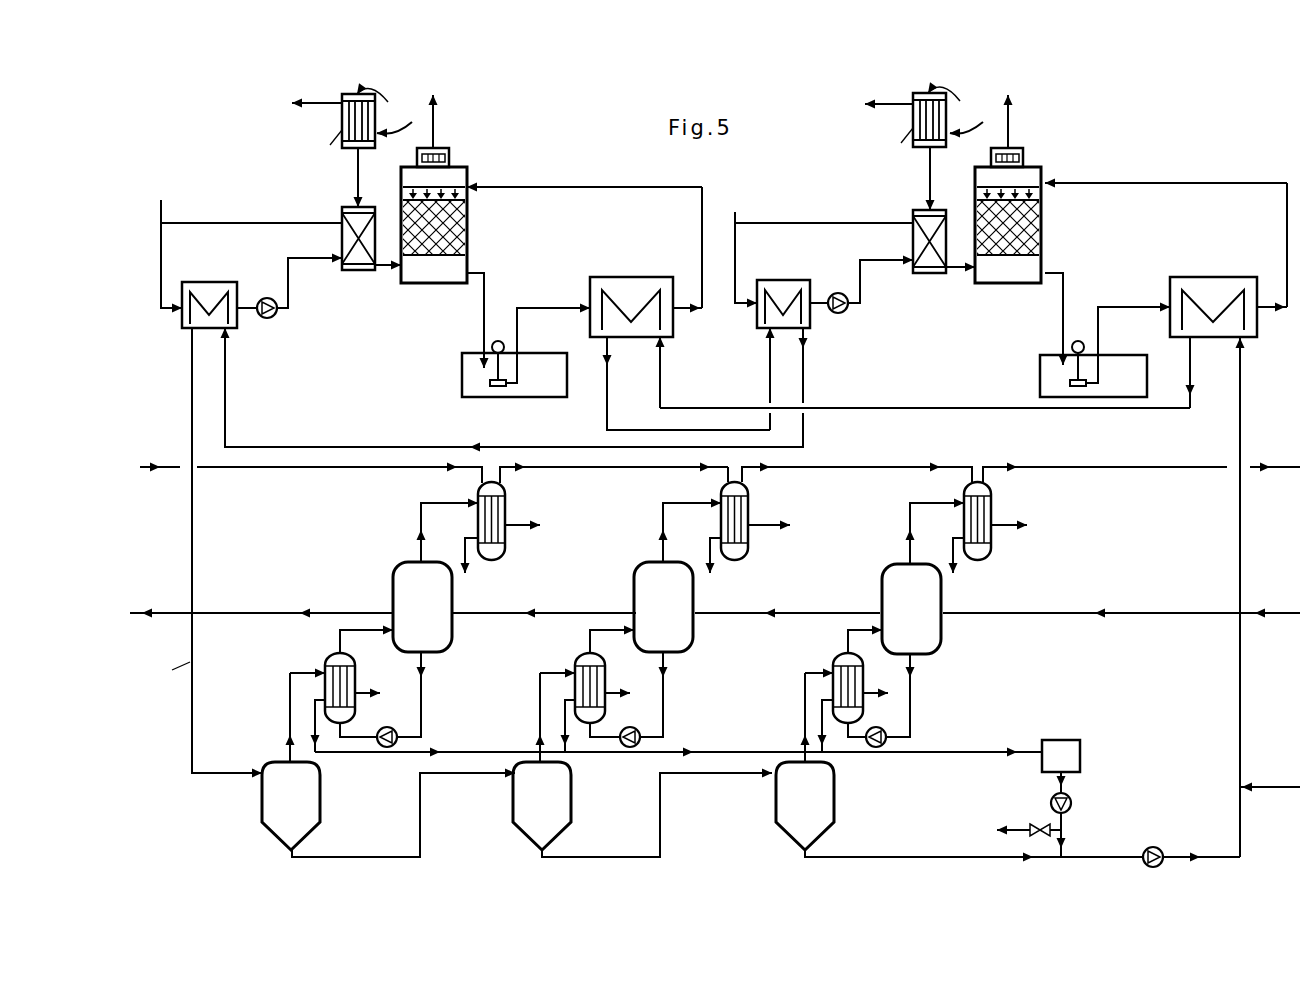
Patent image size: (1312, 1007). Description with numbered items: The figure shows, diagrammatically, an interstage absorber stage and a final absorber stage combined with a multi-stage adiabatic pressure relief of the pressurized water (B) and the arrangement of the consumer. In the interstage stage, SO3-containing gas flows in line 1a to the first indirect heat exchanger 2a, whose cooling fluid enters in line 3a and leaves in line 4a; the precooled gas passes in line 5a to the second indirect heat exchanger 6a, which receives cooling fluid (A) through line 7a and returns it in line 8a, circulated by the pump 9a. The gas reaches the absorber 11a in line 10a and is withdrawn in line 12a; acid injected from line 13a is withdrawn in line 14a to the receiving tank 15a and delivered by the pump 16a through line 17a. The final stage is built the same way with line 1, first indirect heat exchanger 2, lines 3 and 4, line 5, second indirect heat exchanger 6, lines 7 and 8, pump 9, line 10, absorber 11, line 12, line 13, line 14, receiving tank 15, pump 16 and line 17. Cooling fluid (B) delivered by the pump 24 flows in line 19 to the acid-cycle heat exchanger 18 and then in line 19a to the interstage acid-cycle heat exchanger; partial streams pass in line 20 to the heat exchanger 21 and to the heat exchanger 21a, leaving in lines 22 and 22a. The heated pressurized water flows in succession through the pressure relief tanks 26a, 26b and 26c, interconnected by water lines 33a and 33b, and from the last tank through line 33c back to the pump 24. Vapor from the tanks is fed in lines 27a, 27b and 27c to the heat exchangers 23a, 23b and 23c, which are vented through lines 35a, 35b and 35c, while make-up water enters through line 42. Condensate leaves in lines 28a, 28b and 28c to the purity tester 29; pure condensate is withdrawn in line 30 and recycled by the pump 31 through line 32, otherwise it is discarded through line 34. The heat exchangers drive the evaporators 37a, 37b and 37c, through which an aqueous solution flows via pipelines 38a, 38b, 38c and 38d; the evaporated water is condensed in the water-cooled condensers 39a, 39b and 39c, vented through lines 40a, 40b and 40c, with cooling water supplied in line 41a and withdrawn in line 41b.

The line 1a is at (372, 115).
The first indirect heat exchanger 2a is at (326, 147).
The line 3a is at (403, 118).
The line 4a is at (305, 104).
The line 5a is at (360, 195).
The second indirect heat exchanger 6a is at (370, 243).
The line 7a is at (305, 260).
The line 8a is at (256, 222).
The pump 9a is at (273, 317).
The line 10a is at (387, 277).
The absorber 11a is at (470, 222).
The line 12a is at (435, 130).
The line 13a is at (540, 186).
The line 14a is at (486, 282).
The receiving tank 15a is at (470, 372).
The pump 16a is at (494, 340).
The line 17a is at (554, 306).
The indirect acid-cycle heat exchanger 18 is at (631, 276).
The line 19a is at (662, 380).
The indirect heat exchanger 21a is at (214, 282).
The line 22a is at (190, 385).
The line 1 is at (938, 114).
The first indirect heat exchanger 2 is at (897, 144).
The line 3 is at (969, 116).
The line 4 is at (880, 105).
The line 5 is at (932, 177).
The second indirect heat exchanger 6 is at (950, 240).
The line 7 is at (862, 280).
The line 8 is at (832, 222).
The pump 9 is at (845, 312).
The line 10 is at (960, 275).
The absorber 11 is at (1040, 222).
The line 12 is at (1010, 125).
The line 13 is at (1123, 182).
The line 14 is at (1065, 282).
The receiving tank 15 is at (1136, 380).
The pump 16 is at (1078, 340).
The line 17 is at (1141, 306).
The line 19 is at (1242, 402).
The line 20 is at (768, 373).
The indirect heat exchanger 21 is at (788, 280).
The line 22 is at (806, 372).
The line 41a is at (335, 470).
The line 41b is at (1132, 470).
The water-cooled condenser 39a is at (507, 500).
The water-cooled condenser 39b is at (750, 500).
The water-cooled condenser 39c is at (990, 502).
The line 40a is at (522, 532).
The line 40b is at (762, 532).
The line 40c is at (1003, 532).
The evaporator 37a is at (392, 575).
The evaporator 37b is at (633, 574).
The evaporator 37c is at (881, 576).
The pipeline 38a is at (1090, 616).
The pipeline 38b is at (795, 616).
The pipeline 38c is at (540, 616).
The pipeline 38d is at (300, 616).
The heat exchanger 23a is at (352, 664).
The heat exchanger 23b is at (600, 664).
The heat exchanger 23c is at (858, 664).
The line 27a is at (290, 682).
The line 27b is at (545, 680).
The line 27c is at (805, 685).
The line 28a is at (315, 718).
The line 28b is at (565, 716).
The line 28c is at (822, 716).
The line 35a is at (365, 697).
The line 35b is at (612, 697).
The line 35c is at (868, 697).
The pressure relief tank 26a is at (310, 776).
The pressure relief tank 26b is at (565, 776).
The pressure relief tank 26c is at (825, 776).
The water line 33a is at (365, 856).
The water line 33b is at (596, 856).
The line 33c is at (886, 856).
The purity tester 29 is at (1081, 750).
The line 30 is at (1070, 782).
The pump 31 is at (1072, 806).
The line 32 is at (1063, 836).
The line 34 is at (1018, 828).
The pump 24 is at (1160, 850).
The line 42 is at (1270, 786).